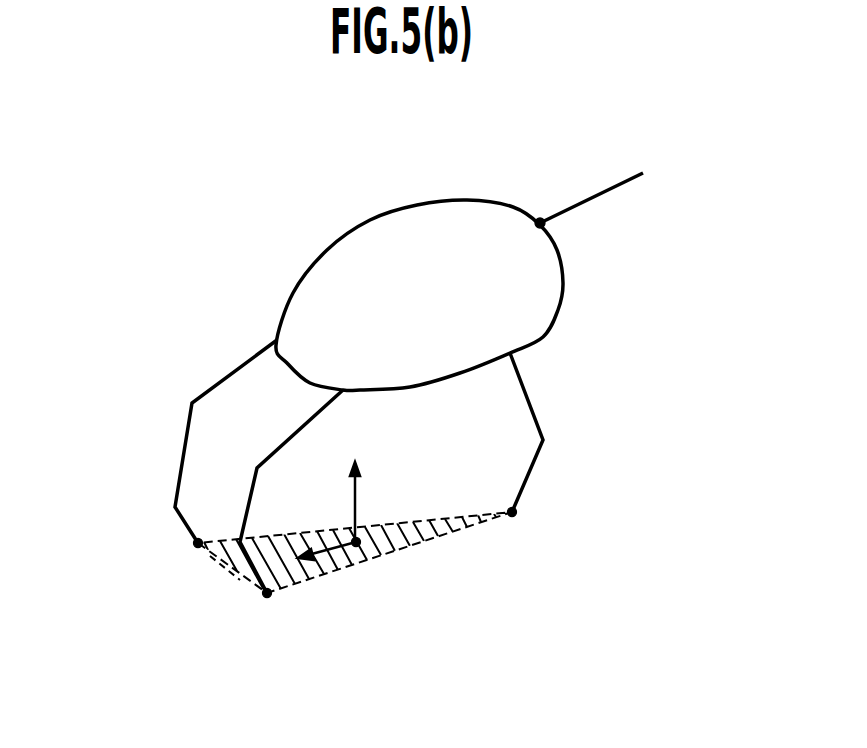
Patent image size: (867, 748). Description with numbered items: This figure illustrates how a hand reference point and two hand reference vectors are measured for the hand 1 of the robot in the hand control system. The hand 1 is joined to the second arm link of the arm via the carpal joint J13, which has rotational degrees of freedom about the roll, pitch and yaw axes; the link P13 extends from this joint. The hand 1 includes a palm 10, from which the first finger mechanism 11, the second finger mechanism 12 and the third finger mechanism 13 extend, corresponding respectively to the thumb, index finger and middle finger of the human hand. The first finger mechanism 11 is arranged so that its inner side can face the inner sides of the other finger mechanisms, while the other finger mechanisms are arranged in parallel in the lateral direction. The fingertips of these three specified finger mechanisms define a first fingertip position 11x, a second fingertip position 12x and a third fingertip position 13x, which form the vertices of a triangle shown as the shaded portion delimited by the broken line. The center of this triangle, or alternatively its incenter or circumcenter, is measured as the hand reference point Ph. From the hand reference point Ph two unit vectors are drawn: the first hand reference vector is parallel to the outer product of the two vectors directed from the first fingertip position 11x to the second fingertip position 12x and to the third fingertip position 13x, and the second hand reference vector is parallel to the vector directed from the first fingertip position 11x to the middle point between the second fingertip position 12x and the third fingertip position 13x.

The hand 1 is at (336, 376).
The palm 10 is at (415, 295).
The first finger mechanism 11 is at (570, 416).
The second finger mechanism 12 is at (286, 396).
The third finger mechanism 13 is at (168, 394).
The first fingertip position 11x is at (514, 514).
The second fingertip position 12x is at (267, 593).
The third fingertip position 13x is at (198, 542).
The carpal joint J13 is at (551, 199).
The link of third leg P13 is at (623, 175).
The hand reference point Ph is at (362, 545).